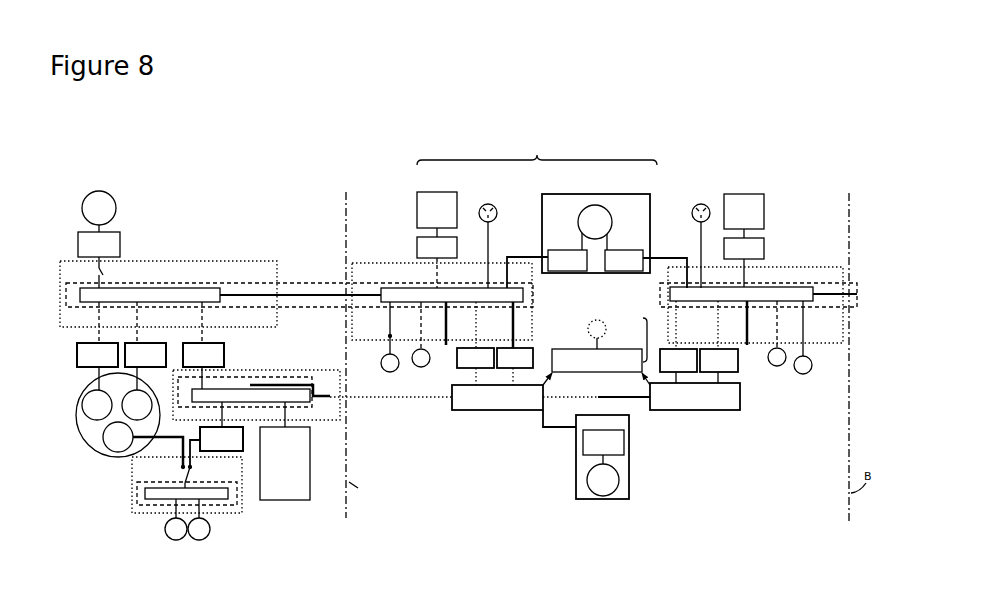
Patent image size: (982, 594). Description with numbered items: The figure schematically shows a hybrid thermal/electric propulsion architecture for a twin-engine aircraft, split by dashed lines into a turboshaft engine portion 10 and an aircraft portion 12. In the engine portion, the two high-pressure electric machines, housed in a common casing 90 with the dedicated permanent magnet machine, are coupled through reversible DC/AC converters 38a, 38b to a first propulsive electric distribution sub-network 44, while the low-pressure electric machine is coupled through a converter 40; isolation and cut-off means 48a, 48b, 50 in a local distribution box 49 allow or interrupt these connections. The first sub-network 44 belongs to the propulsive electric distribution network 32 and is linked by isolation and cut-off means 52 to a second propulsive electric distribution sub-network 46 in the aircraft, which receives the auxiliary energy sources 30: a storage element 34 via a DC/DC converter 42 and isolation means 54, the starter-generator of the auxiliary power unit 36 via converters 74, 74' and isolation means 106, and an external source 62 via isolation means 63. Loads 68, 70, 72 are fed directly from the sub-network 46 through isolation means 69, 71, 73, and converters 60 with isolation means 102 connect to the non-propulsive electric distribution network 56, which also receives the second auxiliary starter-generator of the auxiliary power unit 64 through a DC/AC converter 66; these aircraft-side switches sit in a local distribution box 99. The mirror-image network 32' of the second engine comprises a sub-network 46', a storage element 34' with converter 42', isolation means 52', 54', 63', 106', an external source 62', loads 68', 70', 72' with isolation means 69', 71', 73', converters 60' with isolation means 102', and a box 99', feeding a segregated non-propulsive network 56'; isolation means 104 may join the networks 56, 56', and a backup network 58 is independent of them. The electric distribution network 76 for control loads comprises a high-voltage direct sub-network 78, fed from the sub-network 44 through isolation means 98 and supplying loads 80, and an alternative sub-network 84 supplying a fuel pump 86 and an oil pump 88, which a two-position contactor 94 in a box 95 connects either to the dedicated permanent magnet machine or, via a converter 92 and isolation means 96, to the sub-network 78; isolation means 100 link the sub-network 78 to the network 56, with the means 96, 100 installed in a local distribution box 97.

The turboshaft engine portion 10 is at (300, 183).
The aircraft portion 12 is at (367, 193).
The auxiliary energy sources 30 is at (537, 153).
The propulsive electric distribution network 32 is at (299, 307).
The propulsive electric distribution network of the second turboshaft engine 32' is at (758, 279).
The reversible energy storage element 34 is at (437, 198).
The reversible energy storage element of the second turboshaft engine 34' is at (744, 198).
The auxiliary power unit 36 is at (628, 202).
The reversible electronic power converter 38a is at (77, 365).
The reversible electronic power converter 38b is at (167, 356).
The reversible electronic power converter 40 is at (121, 245).
The reversible electronic direct-to-direct power converter 42 is at (419, 258).
The reversible electronic direct-to-direct power converter of the second turboshaft 42' is at (764, 258).
The first propulsive electric distribution sub-network 44 is at (160, 292).
The second propulsive electric distribution sub-network 46 is at (452, 285).
The second propulsive electric distribution sub-network of the second turboshaft eng 46' is at (741, 285).
The isolation and cut-off means 48a is at (93, 320).
The isolation and cut-off means 48b is at (140, 320).
The local distribution box 49 is at (193, 262).
The isolation and cut-off means 50 is at (105, 273).
The isolation and cut-off means 52 is at (300, 317).
The isolation and cut-off means of the second turboshaft engine 52' is at (842, 268).
The isolation and cut-off means 54 is at (409, 264).
The isolation and cut-off means of the second turboshaft engine 54' is at (766, 276).
The non-propulsive electric distribution network 56 is at (497, 412).
The non-propulsive electric distribution network of the second turboshaft engine 56' is at (703, 408).
The backup non-propulsive electric distribution network 58 is at (626, 340).
The electronic power converter 60 is at (509, 354).
The electronic power converter of the second turboshaft engine 60' is at (703, 356).
The external source 62 is at (493, 229).
The external source of the second turboshaft engine 62' is at (708, 230).
The isolation and cut-off means 63 is at (499, 256).
The isolation and cut-off means of the second turboshaft engine 63' is at (689, 253).
The auxiliary power unit 64 is at (618, 486).
The electronic DC/AC power converter 66 is at (625, 441).
The aircraft load 68 is at (411, 383).
The aircraft load of the second turboshaft engine 68' is at (799, 381).
The isolation and cut-off means 69 is at (382, 354).
The isolation and cut-off means of the second turboshaft engine 69' is at (820, 328).
The aircraft load 70 is at (431, 342).
The aircraft load of the second turboshaft engine 70' is at (773, 368).
The isolation and cut-off means 71 is at (398, 328).
The isolation and cut-off means of the second turboshaft engine 71' is at (790, 324).
The aircraft load 72 is at (462, 335).
The aircraft load of the second turboshaft engine 72' is at (758, 359).
The isolation and cut-off means 73 is at (435, 323).
The isolation and cut-off means of the second turboshaft engine 73' is at (761, 323).
The electronic DC/AC power converter 74 is at (567, 275).
The electronic DC/AC power converter of the second turboshaft engine 74' is at (624, 275).
The electric distribution network 76 is at (270, 376).
The high voltage direct electric distribution sub-network 78 is at (288, 392).
The loads of the electrified control system 80 is at (311, 450).
The alternative electric distribution sub-network 84 is at (152, 499).
The fuel pump 86 is at (172, 538).
The oil pump 88 is at (197, 539).
The casing 90 is at (95, 445).
The electronic DC/AC power converter 92 is at (222, 452).
The isolation and cut-off means 94 is at (178, 475).
The local distribution box 95 is at (237, 512).
The isolation and cut-off means 96 is at (212, 415).
The local distribution box 97 is at (348, 412).
The isolation and cut-off means 98 is at (206, 322).
The local distribution box 99 is at (424, 300).
The local distribution box of the second turboshaft engine 99' is at (756, 289).
The isolation and cut-off means 100 is at (323, 385).
The isolation and cut-off means 102 is at (513, 325).
The isolation and cut-off means of the second turboshaft engine 102' is at (712, 325).
The isolation and cut-off means 104 is at (600, 395).
The isolation and cut-off means 106 is at (527, 260).
The isolation and cut-off means of the second turboshaft engine 106' is at (665, 265).